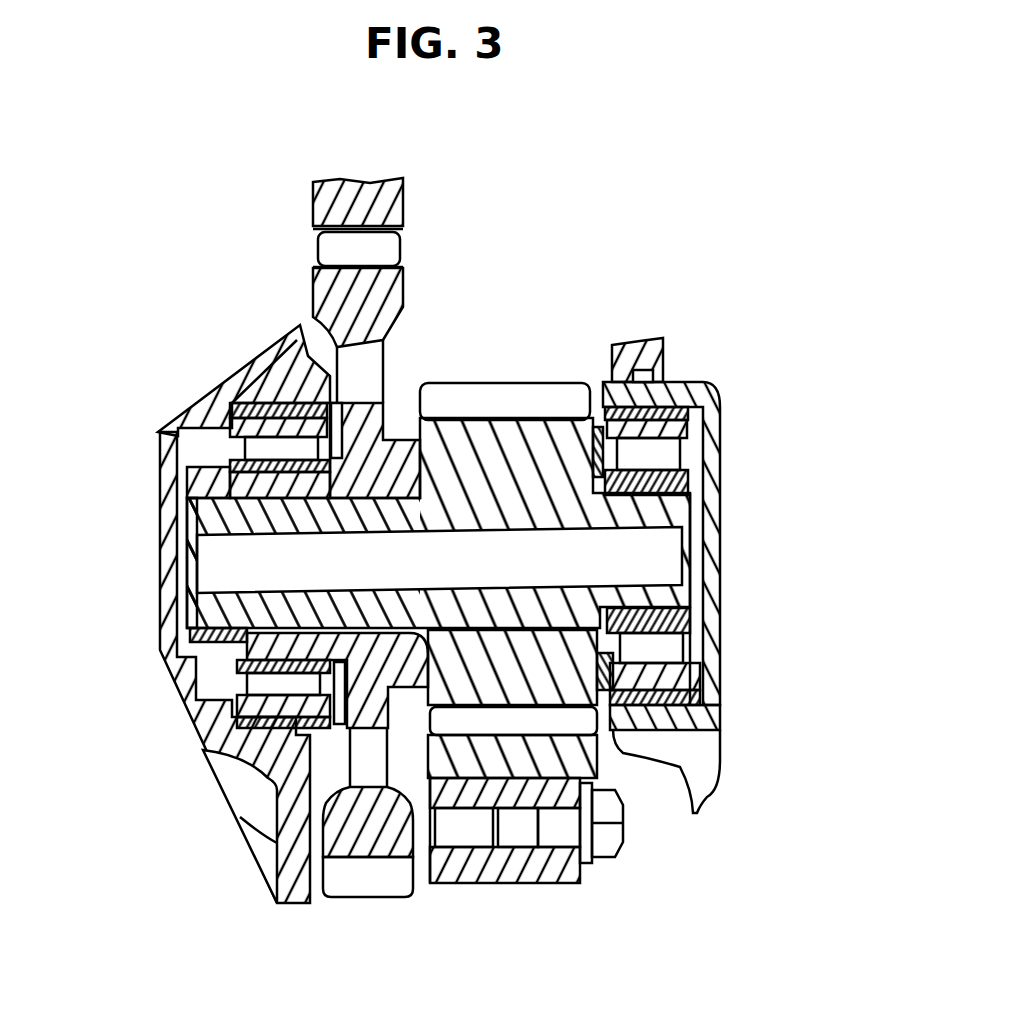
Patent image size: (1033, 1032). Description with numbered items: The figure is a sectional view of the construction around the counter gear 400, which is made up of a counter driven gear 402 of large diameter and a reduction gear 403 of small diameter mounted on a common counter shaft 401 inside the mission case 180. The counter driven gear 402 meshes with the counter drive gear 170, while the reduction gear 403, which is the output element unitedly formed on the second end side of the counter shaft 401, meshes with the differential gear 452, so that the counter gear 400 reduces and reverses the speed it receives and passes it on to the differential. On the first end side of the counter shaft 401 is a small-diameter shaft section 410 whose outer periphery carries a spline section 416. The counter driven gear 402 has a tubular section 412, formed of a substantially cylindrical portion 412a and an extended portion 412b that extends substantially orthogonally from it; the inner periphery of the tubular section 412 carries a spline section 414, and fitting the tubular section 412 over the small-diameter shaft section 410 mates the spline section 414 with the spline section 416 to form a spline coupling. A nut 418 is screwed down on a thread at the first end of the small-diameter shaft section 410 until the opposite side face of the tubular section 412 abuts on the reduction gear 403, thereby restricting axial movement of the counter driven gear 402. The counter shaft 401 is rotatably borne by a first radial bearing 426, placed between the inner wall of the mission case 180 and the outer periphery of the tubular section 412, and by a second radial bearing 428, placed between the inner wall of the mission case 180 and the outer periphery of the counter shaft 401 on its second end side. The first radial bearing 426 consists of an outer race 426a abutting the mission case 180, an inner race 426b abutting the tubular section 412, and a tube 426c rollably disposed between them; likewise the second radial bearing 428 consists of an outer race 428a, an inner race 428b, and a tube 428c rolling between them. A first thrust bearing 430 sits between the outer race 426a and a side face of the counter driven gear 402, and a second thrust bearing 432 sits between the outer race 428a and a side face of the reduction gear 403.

The counter drive gear 170 is at (403, 204).
The counter driven gear 402 is at (405, 285).
The counter gear 400 is at (488, 358).
The first thrust bearing 430 is at (320, 453).
The spline section 416 is at (300, 478).
The tubular section 412 is at (240, 450).
The cylindrical portion 412a is at (240, 470).
The extended portion 412b is at (420, 473).
The reduction gear 403 is at (548, 418).
The second thrust bearing 432 is at (688, 382).
The mission case 180 is at (160, 452).
The nut 418 is at (187, 483).
The counter shaft 401 is at (205, 518).
The spline section 414 is at (282, 532).
The small-diameter shaft section 410 is at (197, 610).
The first radial bearing 426 is at (177, 722).
The outer race 426a is at (270, 738).
The inner race 426b is at (237, 683).
The tube 426c is at (258, 695).
The second radial bearing 428 is at (748, 654).
The outer race 428a is at (677, 676).
The inner race 428b is at (683, 616).
The tube 428c is at (677, 648).
The differential gear 452 is at (597, 768).